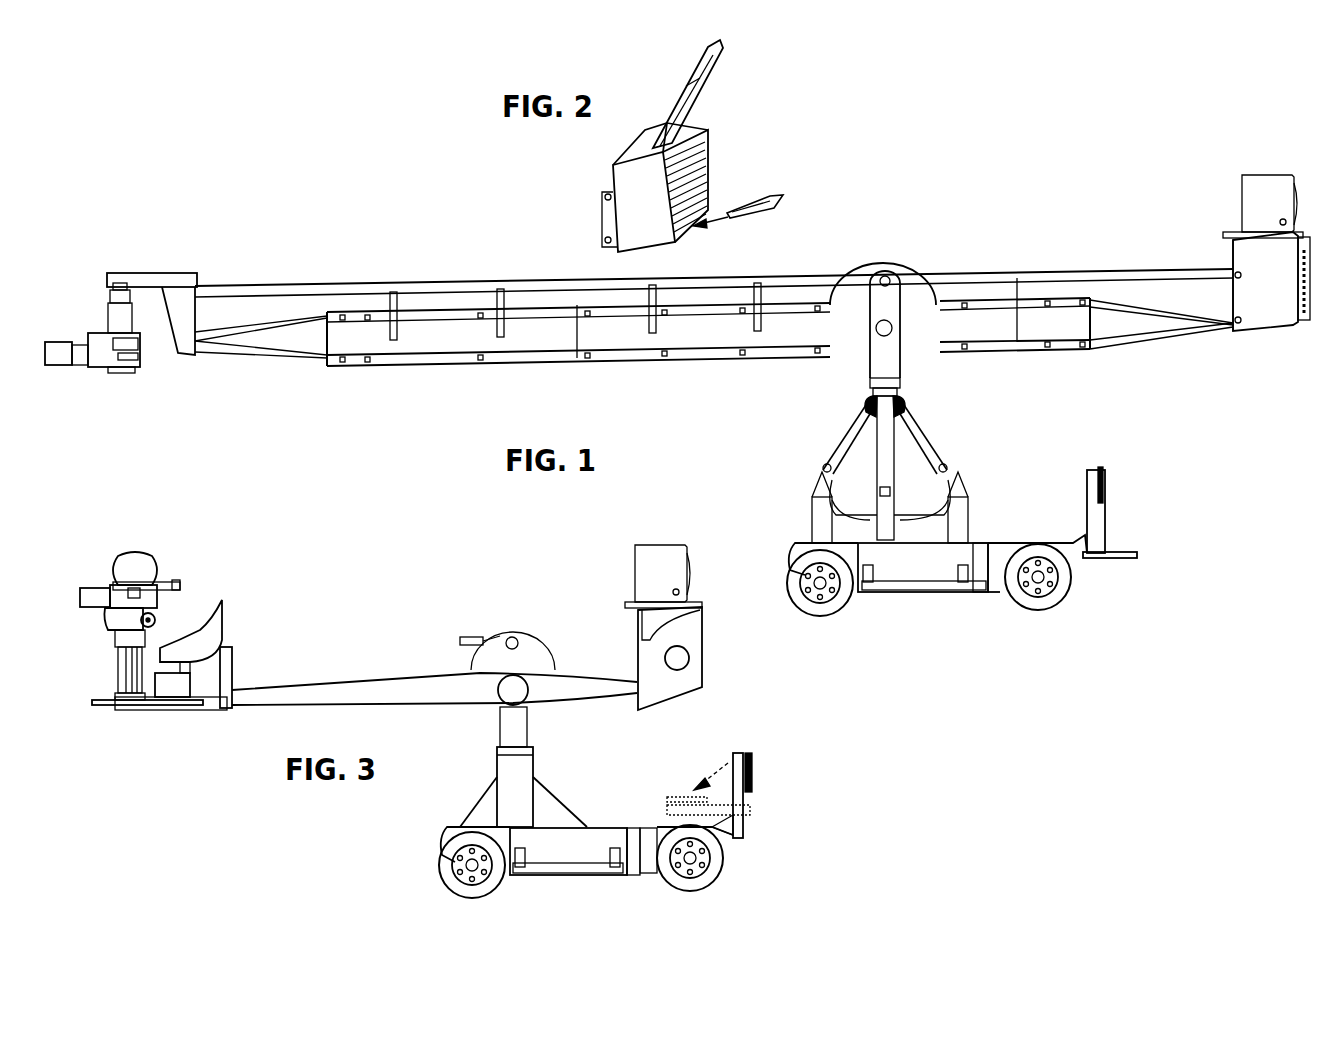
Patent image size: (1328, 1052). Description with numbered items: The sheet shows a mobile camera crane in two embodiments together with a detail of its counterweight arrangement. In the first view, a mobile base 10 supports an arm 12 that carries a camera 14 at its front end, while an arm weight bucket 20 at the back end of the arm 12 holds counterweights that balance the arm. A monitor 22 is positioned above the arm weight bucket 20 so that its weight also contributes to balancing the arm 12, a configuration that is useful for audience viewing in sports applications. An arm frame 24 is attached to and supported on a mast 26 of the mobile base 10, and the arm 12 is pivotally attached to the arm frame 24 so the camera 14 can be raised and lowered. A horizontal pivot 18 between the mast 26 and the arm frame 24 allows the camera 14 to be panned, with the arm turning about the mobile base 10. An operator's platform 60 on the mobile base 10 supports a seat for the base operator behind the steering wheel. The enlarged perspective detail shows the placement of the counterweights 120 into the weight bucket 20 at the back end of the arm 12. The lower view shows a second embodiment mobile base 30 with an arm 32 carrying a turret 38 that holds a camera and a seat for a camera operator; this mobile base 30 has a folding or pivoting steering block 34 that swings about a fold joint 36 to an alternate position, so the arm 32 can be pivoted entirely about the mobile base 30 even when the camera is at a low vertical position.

In FIG. 1, the mobile base 10 is at (786, 540).
In FIG. 1, the arm 12 is at (422, 377).
In FIG. 1, the camera 14 is at (125, 373).
In FIG. 1, the horizontal pivot 18 is at (902, 383).
In FIG. 1, the arm weight bucket 20 is at (1262, 310).
In FIG. 1, the monitor 22 is at (1255, 200).
In FIG. 1, the arm frame 24 is at (875, 367).
In FIG. 1, the mast 26 is at (887, 460).
In FIG. 3, the second embodiment mobile base 30 is at (466, 802).
In FIG. 3, the arm 32 is at (367, 690).
In FIG. 3, the steering block 34 is at (740, 760).
In FIG. 3, the fold joint 36 is at (722, 832).
In FIG. 3, the turret 38 is at (185, 705).
In FIG. 1, the operator's platform 60 is at (1115, 550).
In FIG. 2, the counterweights 120 is at (755, 195).